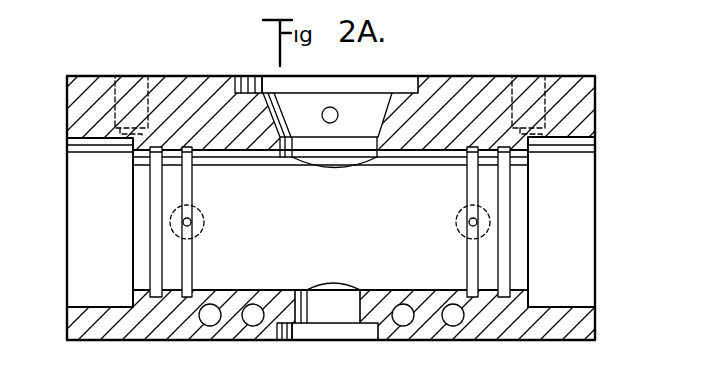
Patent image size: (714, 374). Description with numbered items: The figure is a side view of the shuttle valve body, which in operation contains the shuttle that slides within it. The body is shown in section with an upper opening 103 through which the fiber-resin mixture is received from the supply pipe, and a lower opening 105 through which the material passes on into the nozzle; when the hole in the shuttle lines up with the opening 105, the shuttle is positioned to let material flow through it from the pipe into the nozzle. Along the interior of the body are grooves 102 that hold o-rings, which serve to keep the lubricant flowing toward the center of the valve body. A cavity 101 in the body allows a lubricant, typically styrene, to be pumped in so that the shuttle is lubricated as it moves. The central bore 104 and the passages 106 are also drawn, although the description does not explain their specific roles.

The cavity 101 is at (189, 262).
The grooves for o-rings 102 is at (150, 221).
The opening 103 is at (345, 76).
The chamber 104 is at (343, 225).
The opening 105 is at (325, 341).
The passage 106 is at (255, 304).